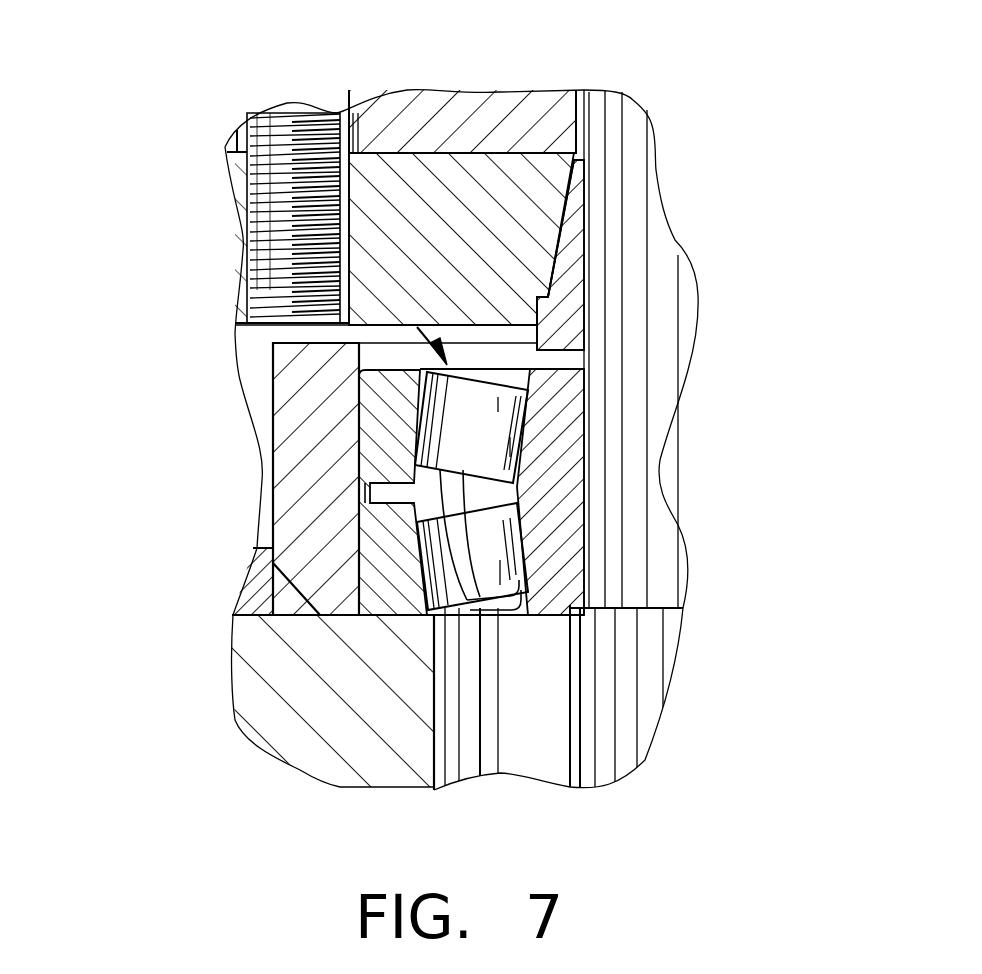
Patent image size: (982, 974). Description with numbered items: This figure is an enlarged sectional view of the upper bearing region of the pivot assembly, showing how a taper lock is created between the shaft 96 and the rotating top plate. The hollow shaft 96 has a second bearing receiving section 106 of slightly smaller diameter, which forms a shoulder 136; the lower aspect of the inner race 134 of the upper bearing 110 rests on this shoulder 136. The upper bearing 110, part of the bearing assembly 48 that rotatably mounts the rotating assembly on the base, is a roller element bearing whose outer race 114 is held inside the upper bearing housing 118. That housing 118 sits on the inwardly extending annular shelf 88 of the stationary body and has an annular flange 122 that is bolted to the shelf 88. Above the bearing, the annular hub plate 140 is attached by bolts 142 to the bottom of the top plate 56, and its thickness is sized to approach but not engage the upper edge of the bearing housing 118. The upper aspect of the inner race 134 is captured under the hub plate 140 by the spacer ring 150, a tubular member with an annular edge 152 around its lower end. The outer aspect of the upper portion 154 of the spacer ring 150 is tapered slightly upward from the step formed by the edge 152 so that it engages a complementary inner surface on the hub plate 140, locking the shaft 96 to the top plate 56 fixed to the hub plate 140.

The top plate 56 is at (537, 132).
The hub plate 140 is at (503, 198).
The upper portion 154 is at (552, 260).
The spacer ring 150 is at (583, 280).
The annular edge 152 is at (572, 334).
The bolts 142 is at (287, 185).
The bearing assembly 48 is at (343, 262).
The upper bearing housing 118 is at (312, 428).
The outer race 114 is at (378, 532).
The annular flange 122 is at (252, 588).
The upper bearing 110 is at (487, 425).
The second bearing receiving section 106 is at (635, 467).
The inner race 134 is at (555, 535).
The shoulder 136 is at (652, 608).
The annular shelf 88 is at (300, 706).
The shaft 96 is at (658, 705).